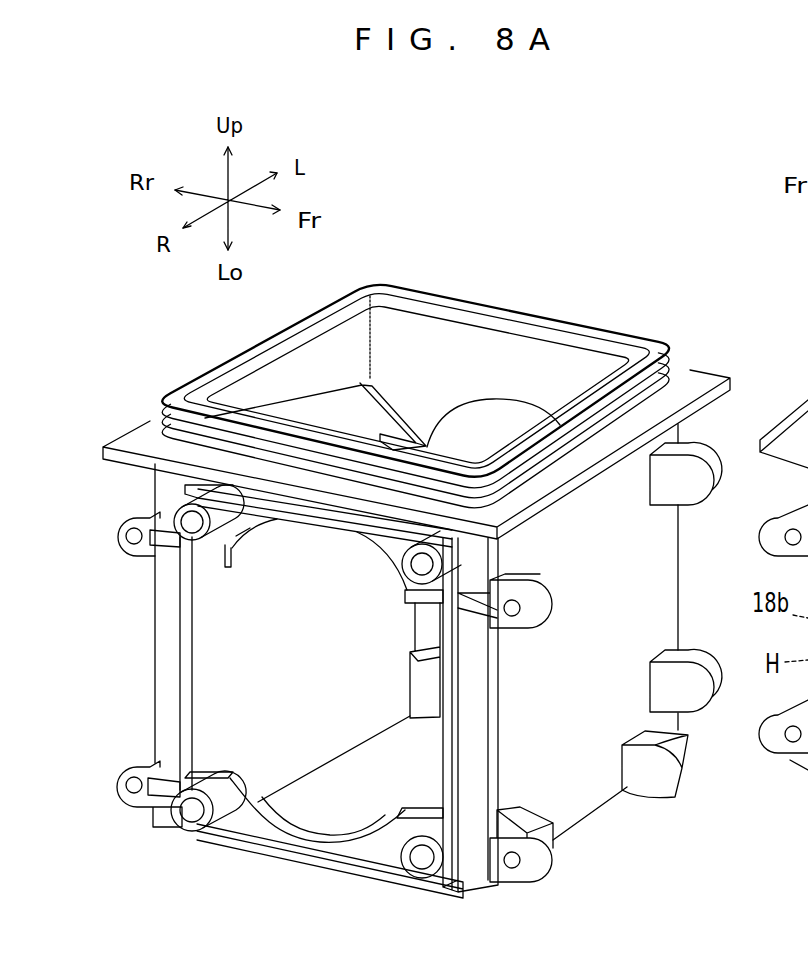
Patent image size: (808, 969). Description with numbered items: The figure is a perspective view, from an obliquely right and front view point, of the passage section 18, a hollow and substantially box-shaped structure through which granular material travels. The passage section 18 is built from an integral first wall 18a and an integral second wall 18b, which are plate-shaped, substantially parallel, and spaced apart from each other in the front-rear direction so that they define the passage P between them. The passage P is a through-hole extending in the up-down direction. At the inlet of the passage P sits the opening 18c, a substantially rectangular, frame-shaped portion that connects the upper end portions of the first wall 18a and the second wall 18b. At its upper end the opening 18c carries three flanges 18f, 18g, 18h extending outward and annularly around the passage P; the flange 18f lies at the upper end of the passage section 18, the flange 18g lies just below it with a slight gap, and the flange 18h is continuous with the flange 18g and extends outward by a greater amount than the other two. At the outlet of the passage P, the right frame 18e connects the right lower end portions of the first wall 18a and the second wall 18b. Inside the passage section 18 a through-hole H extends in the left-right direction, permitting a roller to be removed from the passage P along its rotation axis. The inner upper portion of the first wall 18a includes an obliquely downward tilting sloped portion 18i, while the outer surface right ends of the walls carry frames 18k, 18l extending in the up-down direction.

The passage section 18 is at (559, 305).
The first wall 18a is at (213, 637).
The second wall 18b is at (660, 587).
The opening 18c is at (609, 321).
The right frame 18e is at (303, 847).
The flange 18f is at (680, 355).
The flange 18g is at (682, 376).
The flange 18h is at (730, 380).
The sloped portion 18i is at (373, 413).
The frame 18k is at (168, 592).
The frame 18l is at (468, 683).
The through-hole H is at (228, 700).
The passage P is at (333, 343).